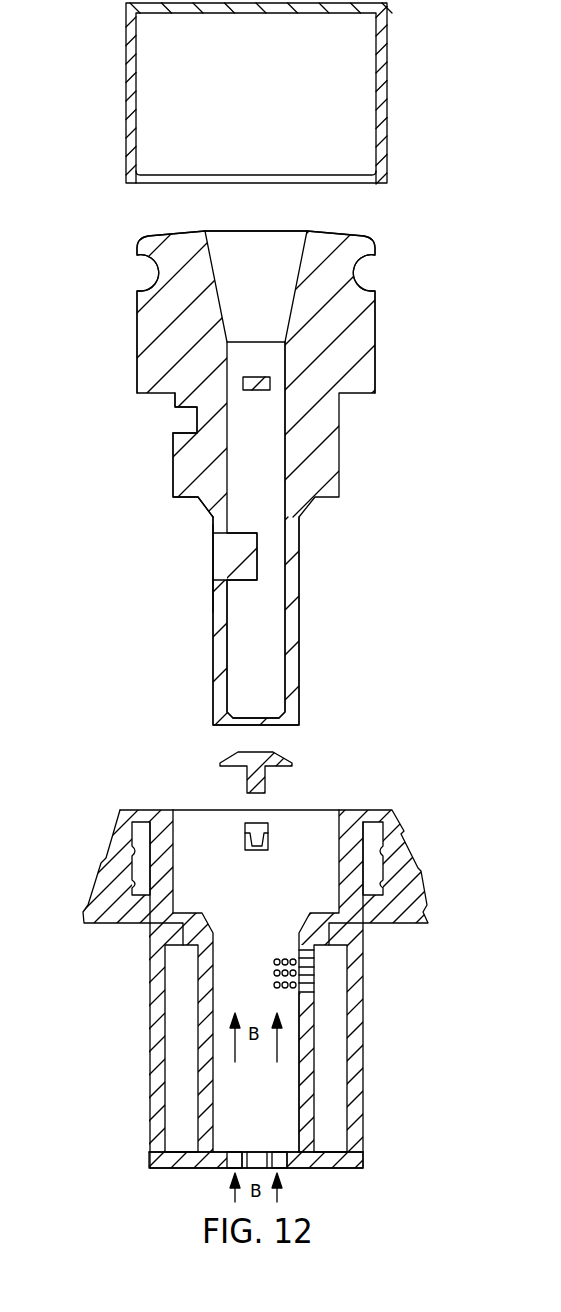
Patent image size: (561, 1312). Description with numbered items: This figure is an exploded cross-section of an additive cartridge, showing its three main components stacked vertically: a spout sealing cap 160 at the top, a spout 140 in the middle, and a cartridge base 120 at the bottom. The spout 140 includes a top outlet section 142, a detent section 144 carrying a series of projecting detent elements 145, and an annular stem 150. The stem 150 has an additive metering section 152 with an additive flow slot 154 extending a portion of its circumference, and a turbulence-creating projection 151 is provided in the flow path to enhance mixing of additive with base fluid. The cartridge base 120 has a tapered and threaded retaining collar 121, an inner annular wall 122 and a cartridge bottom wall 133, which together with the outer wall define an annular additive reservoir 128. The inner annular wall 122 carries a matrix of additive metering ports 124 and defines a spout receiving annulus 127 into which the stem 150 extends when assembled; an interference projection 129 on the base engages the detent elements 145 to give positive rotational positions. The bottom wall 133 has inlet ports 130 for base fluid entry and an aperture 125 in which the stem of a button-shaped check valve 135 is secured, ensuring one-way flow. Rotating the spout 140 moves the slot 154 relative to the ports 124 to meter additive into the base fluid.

The spout sealing cap 160 is at (380, 87).
The spout 140 is at (375, 370).
The top outlet section 142 is at (375, 305).
The detent elements 145 is at (195, 420).
The detent section 144 is at (173, 465).
The turbulence-creating projection 151 is at (258, 392).
The annular stem 150 is at (300, 578).
The additive flow slot 154 is at (236, 560).
The additive metering section 152 is at (177, 525).
The base fluid flow check valve 135 is at (279, 757).
The retaining collar 121 is at (416, 866).
The spout receiving annulus 127 is at (327, 878).
The interference projection 129 is at (268, 832).
The cartridge base 120 is at (360, 1018).
The annular additive reservoir 128 is at (177, 1035).
The additive metering ports 124 is at (273, 982).
The inner annular wall 122 is at (307, 1087).
The inlet ports 130 is at (237, 1152).
The aperture 125 is at (265, 1152).
The cartridge bottom wall 133 is at (333, 1164).